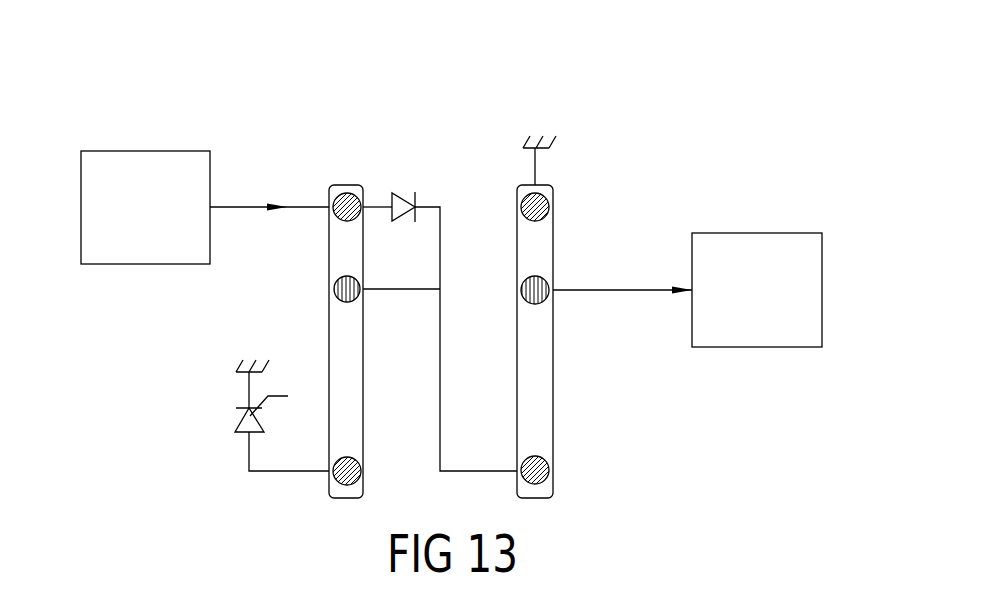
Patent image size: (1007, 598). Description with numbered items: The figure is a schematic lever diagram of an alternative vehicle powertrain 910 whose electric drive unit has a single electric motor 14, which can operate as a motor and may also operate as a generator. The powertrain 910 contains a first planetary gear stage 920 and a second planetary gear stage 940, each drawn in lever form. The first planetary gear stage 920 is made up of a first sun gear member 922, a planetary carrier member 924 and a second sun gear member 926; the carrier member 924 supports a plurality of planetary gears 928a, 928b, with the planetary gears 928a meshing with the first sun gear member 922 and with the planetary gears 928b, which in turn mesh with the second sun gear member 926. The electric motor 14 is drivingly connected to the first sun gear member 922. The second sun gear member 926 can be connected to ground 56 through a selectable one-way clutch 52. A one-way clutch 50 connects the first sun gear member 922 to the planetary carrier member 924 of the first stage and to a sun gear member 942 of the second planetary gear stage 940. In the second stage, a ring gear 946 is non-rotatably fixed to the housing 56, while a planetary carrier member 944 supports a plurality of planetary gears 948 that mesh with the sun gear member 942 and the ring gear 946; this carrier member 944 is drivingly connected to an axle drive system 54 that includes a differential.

The electric motor 14 is at (145, 207).
The axle drive system 54 is at (757, 290).
The one-way clutch 50 is at (402, 200).
The selectable one-way clutch 52 is at (244, 418).
The ground 56 is at (251, 368).
The powertrain 910 is at (617, 80).
The first planetary gear stage 920 is at (305, 142).
The first sun gear member 922 is at (340, 193).
The planetary carrier member 924 is at (420, 290).
The second sun gear member 926 is at (356, 484).
The planetary gears 928a is at (337, 296).
The planetary gears 928b is at (347, 289).
The second planetary gear stage 940 is at (720, 158).
The sun gear member 942 is at (543, 482).
The planetary carrier member 944 is at (647, 289).
The ring gear 946 is at (543, 193).
The planetary gears 948 is at (546, 301).